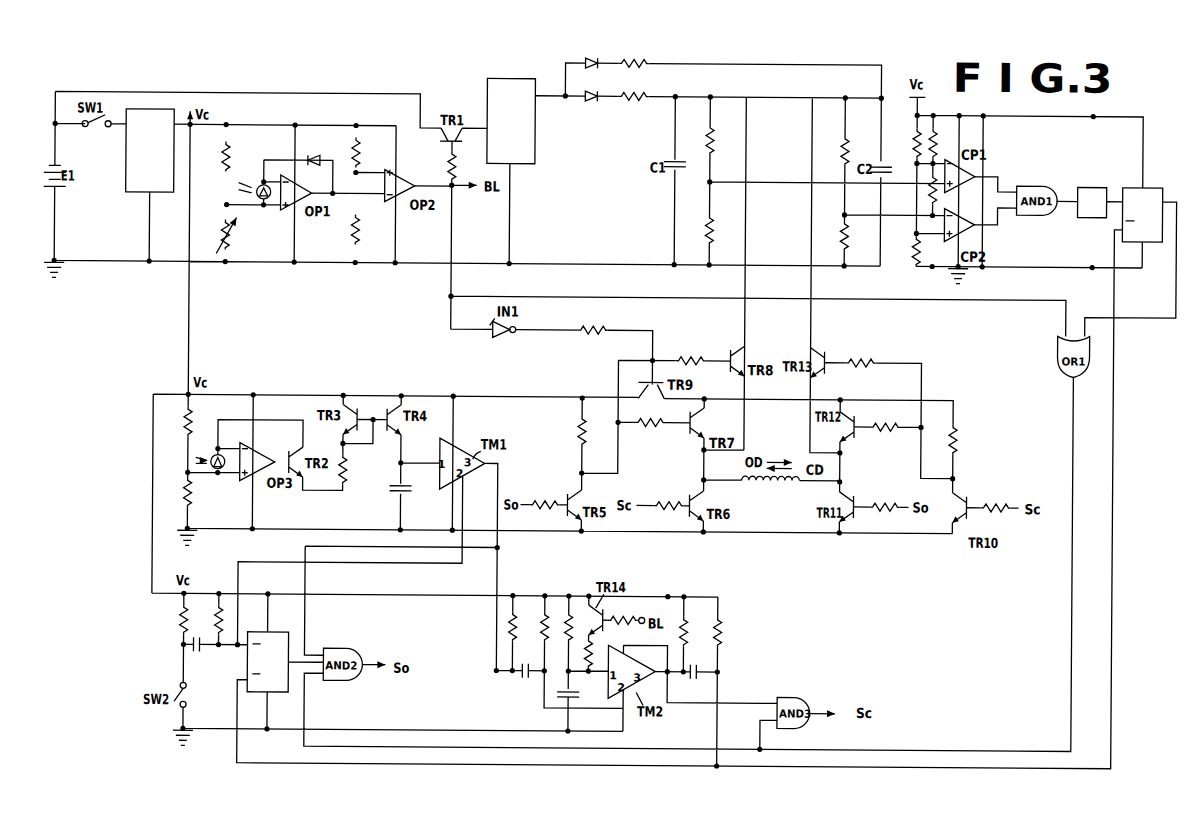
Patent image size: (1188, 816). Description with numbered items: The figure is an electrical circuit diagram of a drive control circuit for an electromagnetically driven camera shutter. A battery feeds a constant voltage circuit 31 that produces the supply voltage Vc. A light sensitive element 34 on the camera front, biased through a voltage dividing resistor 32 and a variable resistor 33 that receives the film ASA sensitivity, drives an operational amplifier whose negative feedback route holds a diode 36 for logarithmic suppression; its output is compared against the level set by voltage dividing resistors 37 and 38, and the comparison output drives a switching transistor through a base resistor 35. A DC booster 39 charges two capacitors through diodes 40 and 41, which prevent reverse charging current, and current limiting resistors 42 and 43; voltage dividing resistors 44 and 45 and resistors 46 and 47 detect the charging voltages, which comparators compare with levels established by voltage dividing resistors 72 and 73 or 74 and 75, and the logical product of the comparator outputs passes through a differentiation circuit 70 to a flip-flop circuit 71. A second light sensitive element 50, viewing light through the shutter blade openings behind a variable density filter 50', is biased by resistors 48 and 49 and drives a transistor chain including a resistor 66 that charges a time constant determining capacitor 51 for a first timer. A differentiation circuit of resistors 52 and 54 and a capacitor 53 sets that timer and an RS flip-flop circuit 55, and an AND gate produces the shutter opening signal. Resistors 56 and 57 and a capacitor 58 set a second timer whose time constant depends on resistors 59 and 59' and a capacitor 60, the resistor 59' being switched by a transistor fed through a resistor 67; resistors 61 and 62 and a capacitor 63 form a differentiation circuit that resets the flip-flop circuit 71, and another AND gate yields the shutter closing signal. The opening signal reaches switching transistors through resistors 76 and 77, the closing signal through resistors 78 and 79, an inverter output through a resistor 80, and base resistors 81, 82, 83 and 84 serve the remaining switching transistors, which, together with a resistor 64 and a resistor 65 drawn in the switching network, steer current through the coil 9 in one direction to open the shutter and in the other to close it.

The coil 9 is at (770, 492).
The constant voltage circuit 31 is at (150, 150).
The voltage dividing resistor 32 is at (235, 157).
The variable resistor 33 is at (233, 235).
The light sensitive element 34 is at (256, 195).
The base resistor 35 is at (461, 166).
The diode 36 is at (317, 149).
The voltage dividing resistor 37 is at (365, 152).
The voltage dividing resistor 38 is at (364, 230).
The DC booster 39 is at (511, 120).
The diode 40 is at (593, 75).
The diode 41 is at (590, 109).
The resistor 42 is at (633, 75).
The resistor 43 is at (633, 110).
The voltage dividing resistor 44 is at (719, 140).
The voltage dividing resistor 45 is at (718, 230).
The voltage dividing resistor 46 is at (836, 151).
The voltage dividing resistor 47 is at (835, 237).
The resistor 48 is at (178, 421).
The resistor 49 is at (177, 492).
The light sensitive element 50 is at (224, 476).
The variable density filter 50' is at (181, 449).
The time constant determining capacitor 51 is at (394, 487).
The resistor 52 is at (172, 621).
The capacitor 53 is at (199, 656).
The resistor 54 is at (209, 621).
The RS flip-flop circuit 55 is at (287, 630).
The resistor 56 is at (513, 617).
The resistor 57 is at (536, 627).
The capacitor 58 is at (525, 683).
The resistor 59 is at (561, 627).
The resistor 59' is at (605, 647).
The capacitor 60 is at (574, 697).
The resistor 61 is at (694, 632).
The resistor 62 is at (729, 632).
The capacitor 63 is at (699, 684).
The resistor 64 is at (571, 431).
The resistor 65 is at (963, 440).
The resistor 66 is at (352, 469).
The resistor 67 is at (625, 615).
The differentiation circuit 70 is at (1092, 203).
The flip-flop circuit 71 is at (1148, 180).
The voltage dividing resistor 72 is at (943, 143).
The voltage dividing resistor 73 is at (932, 190).
The voltage dividing resistor 74 is at (909, 143).
The voltage dividing resistor 75 is at (908, 251).
The resistor 76 is at (544, 494).
The resistor 77 is at (884, 496).
The resistor 78 is at (668, 495).
The resistor 79 is at (995, 497).
The resistor 80 is at (593, 319).
The base resistor 81 is at (650, 412).
The base resistor 82 is at (690, 350).
The base resistor 83 is at (885, 416).
The base resistor 84 is at (860, 352).